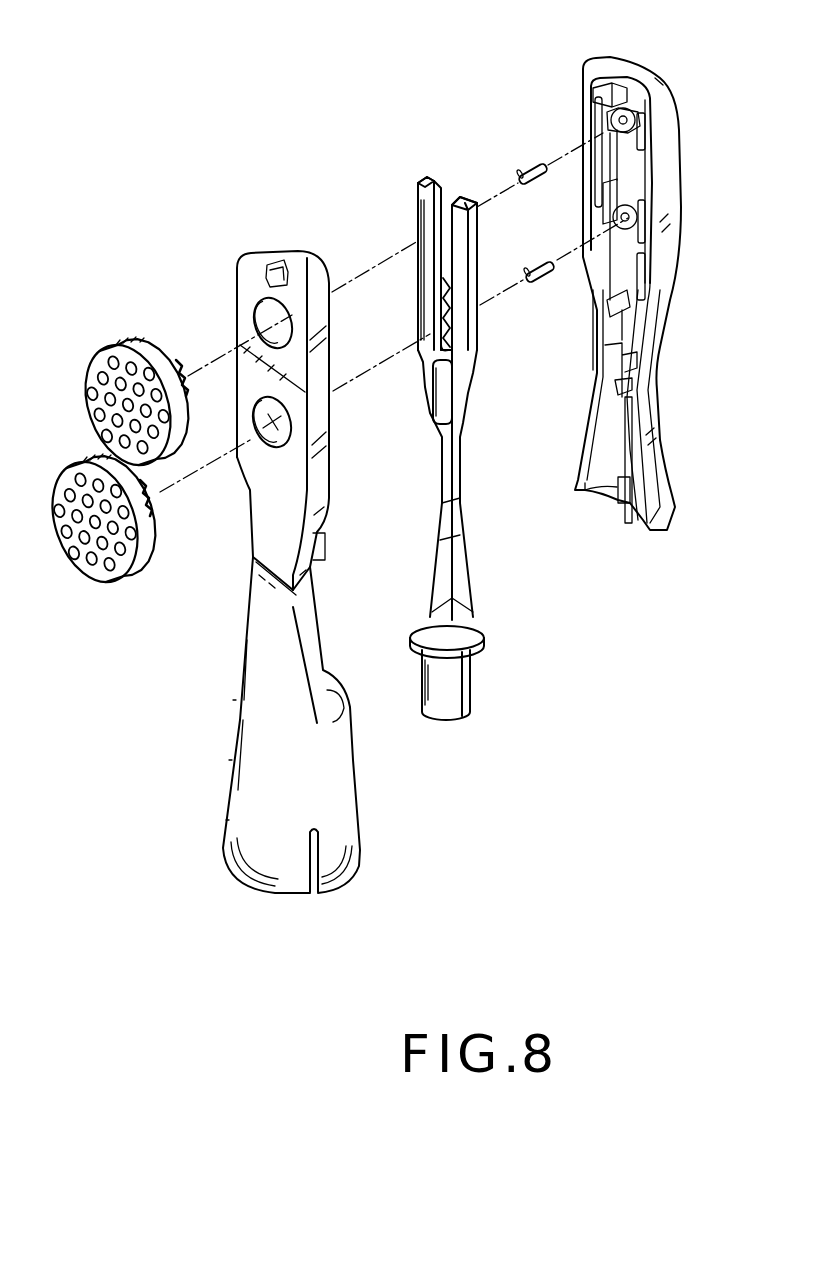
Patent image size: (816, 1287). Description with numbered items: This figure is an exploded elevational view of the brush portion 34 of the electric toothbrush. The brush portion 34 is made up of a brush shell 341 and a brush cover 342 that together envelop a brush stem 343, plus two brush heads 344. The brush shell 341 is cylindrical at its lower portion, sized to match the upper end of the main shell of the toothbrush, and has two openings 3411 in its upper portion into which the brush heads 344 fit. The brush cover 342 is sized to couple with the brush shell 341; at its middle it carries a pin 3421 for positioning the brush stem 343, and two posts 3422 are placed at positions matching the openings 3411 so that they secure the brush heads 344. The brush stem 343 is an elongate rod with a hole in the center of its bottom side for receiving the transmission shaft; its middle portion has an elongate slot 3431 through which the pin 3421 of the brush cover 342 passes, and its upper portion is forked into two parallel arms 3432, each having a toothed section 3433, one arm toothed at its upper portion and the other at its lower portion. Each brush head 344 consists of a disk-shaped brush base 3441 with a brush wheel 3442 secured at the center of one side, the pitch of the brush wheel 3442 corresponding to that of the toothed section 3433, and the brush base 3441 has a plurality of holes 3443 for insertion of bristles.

The brush portion 34 is at (369, 140).
The brush shell 341 is at (353, 847).
The openings 3411 is at (263, 320).
The brush cover 342 is at (614, 515).
The pin 3421 is at (592, 320).
The posts 3422 is at (537, 160).
The brush stem 343 is at (454, 155).
The elongate slot 3431 is at (440, 390).
The parallel arms 3432 is at (428, 212).
The toothed section 3433 is at (445, 308).
The brush heads 344 is at (158, 358).
The brush base 3441 is at (122, 573).
The brush wheel 3442 is at (182, 510).
The holes 3443 is at (76, 562).